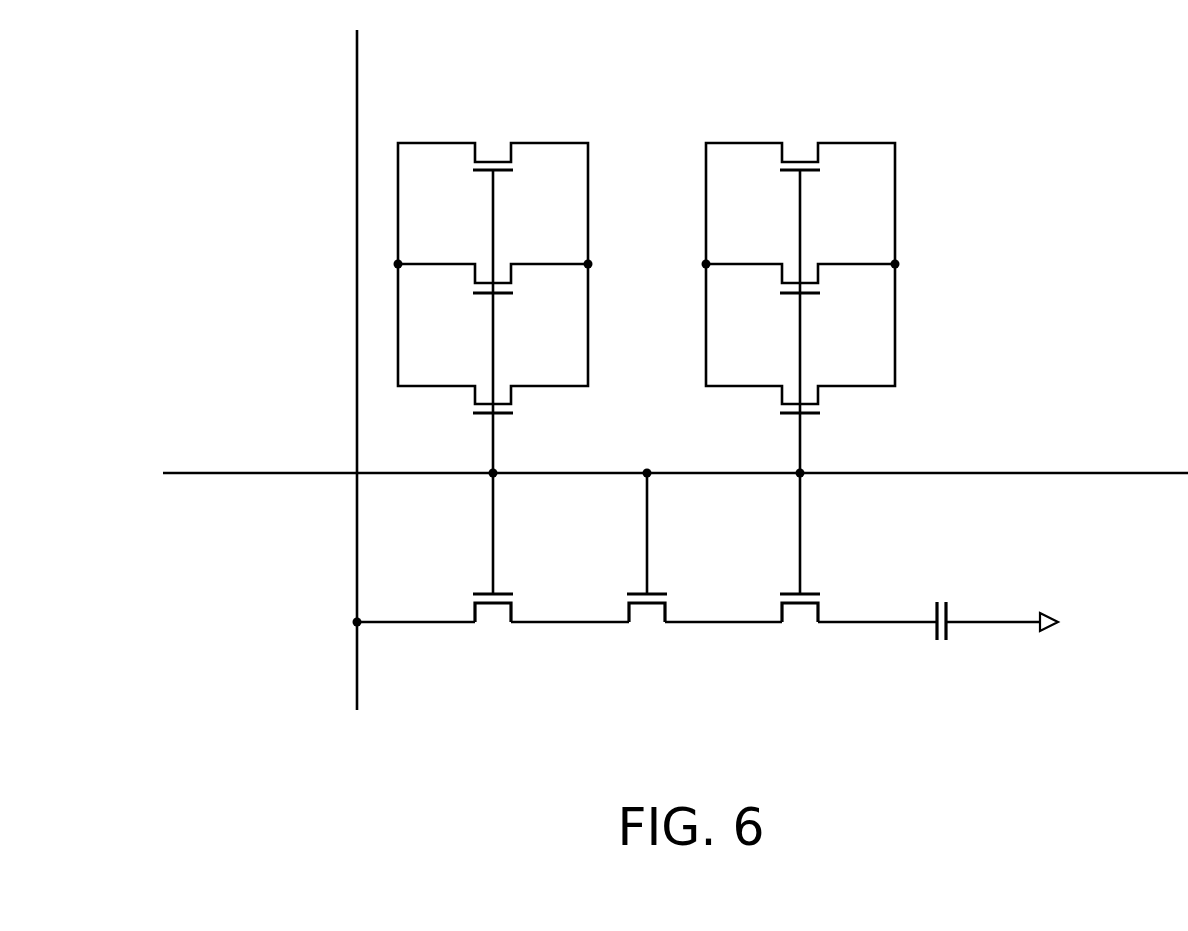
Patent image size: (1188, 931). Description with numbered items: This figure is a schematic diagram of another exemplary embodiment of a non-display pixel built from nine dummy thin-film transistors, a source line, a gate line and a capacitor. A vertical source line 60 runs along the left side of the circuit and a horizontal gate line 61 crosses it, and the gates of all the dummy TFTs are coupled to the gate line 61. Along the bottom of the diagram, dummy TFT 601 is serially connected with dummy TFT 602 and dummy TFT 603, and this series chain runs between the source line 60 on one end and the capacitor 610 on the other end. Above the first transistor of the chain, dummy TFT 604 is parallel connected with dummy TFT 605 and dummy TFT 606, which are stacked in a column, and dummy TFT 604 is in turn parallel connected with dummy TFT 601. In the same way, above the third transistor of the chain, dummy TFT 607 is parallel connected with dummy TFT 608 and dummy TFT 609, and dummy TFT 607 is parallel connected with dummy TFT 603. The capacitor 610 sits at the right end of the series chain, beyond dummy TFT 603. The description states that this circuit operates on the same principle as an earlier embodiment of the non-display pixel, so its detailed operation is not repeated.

The source line 60 is at (357, 55).
The gate line 61 is at (248, 473).
The dummy TFT 601 is at (496, 627).
The dummy TFT 602 is at (649, 618).
The dummy TFT 603 is at (803, 618).
The dummy TFT 604 is at (503, 386).
The dummy TFT 605 is at (503, 263).
The dummy TFT 606 is at (490, 143).
The dummy TFT 607 is at (810, 386).
The dummy TFT 608 is at (810, 263).
The dummy TFT 609 is at (798, 143).
The capacitor 610 is at (942, 647).